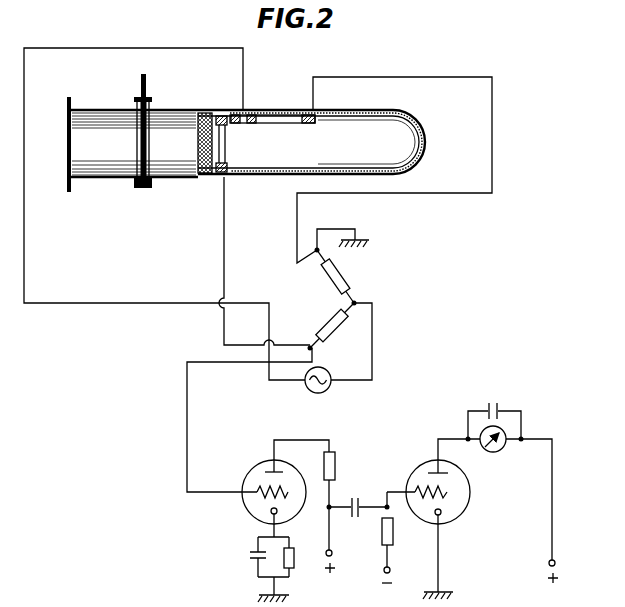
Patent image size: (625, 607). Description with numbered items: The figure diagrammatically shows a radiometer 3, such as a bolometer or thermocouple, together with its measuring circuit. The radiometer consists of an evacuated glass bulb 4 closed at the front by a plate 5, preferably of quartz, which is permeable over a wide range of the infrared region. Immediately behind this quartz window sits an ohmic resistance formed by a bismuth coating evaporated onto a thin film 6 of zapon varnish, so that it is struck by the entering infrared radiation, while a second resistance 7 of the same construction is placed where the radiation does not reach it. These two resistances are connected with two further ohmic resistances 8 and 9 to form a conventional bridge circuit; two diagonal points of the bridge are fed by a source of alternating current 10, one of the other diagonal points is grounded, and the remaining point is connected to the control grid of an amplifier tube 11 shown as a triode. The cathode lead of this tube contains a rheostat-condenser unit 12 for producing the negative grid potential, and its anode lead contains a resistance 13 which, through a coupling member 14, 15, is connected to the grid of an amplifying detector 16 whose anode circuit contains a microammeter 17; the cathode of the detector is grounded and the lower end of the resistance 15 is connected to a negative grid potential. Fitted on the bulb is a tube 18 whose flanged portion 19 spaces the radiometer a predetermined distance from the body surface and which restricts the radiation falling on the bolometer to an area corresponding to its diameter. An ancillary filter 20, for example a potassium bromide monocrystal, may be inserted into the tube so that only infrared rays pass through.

The radiometer 3 is at (477, 94).
The glass bulb 4 is at (412, 166).
The plate 5 is at (198, 150).
The thin film 6 is at (227, 150).
The second resistance 7 is at (280, 116).
The ohmic resistance 8 is at (343, 278).
The ohmic resistance 9 is at (333, 332).
The source of alternating current 10 is at (328, 389).
The amplifier tube 11 is at (258, 473).
The rheostat-condenser unit 12 is at (258, 571).
The resistance 13 is at (336, 466).
The coupling member 14 is at (356, 519).
The resistance 15 is at (393, 536).
The amplifying detector 16 is at (463, 499).
The microammeter 17 is at (500, 452).
The tube 18 is at (172, 182).
The flanged portion 19 is at (71, 187).
The ancillary filter 20 is at (147, 83).